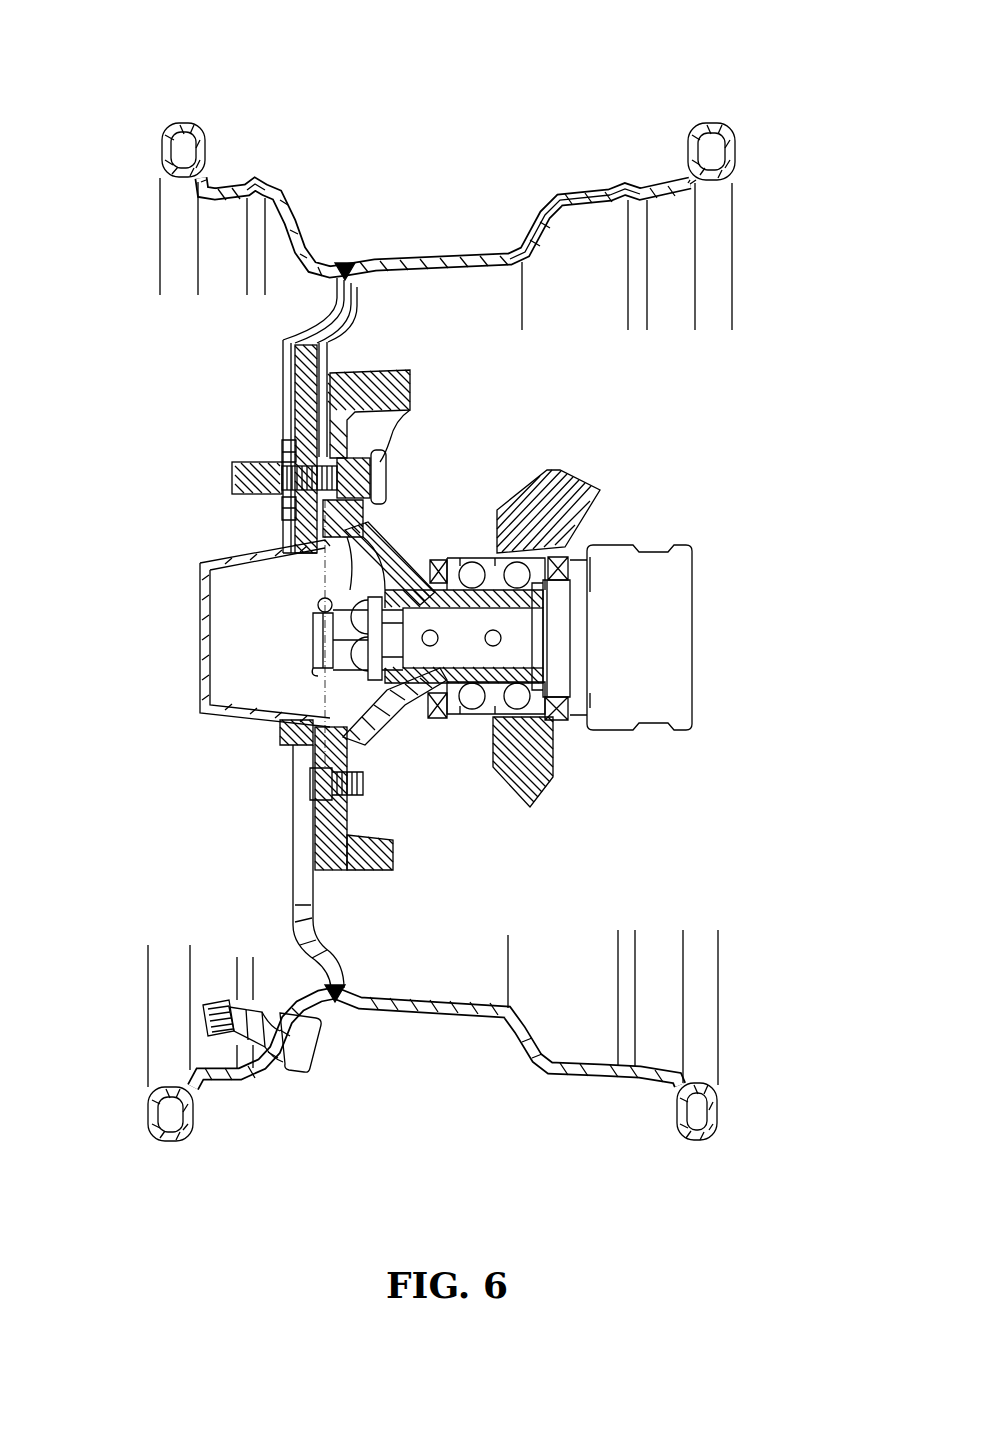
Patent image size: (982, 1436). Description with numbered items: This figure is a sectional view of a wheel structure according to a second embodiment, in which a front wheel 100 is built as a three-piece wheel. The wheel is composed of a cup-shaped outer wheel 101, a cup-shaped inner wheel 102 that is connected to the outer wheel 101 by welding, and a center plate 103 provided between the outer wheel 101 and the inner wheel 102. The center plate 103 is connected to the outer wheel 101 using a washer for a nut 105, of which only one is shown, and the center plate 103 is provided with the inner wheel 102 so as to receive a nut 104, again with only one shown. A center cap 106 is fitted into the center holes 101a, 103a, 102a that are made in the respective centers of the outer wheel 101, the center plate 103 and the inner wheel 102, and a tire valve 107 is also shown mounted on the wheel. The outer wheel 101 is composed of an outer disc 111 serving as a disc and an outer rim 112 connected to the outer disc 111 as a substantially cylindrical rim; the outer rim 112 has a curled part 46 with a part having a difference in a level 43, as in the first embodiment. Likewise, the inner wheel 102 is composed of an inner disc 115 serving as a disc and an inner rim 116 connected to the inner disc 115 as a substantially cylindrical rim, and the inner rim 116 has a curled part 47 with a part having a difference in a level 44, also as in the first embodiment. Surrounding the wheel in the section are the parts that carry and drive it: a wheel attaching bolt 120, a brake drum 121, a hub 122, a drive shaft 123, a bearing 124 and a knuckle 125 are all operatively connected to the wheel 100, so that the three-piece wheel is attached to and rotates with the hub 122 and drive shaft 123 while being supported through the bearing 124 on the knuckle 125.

The front wheel 100 is at (528, 112).
The outer wheel 101 is at (280, 183).
The center hole 101a is at (268, 545).
The inner wheel 102 is at (492, 256).
The center hole 102a is at (375, 548).
The center plate 103 is at (298, 398).
The center hole 103a is at (320, 592).
The nut 104 is at (232, 460).
The washer for a nut 105 is at (288, 452).
The center cap 106 is at (205, 718).
The tire valve 107 is at (290, 1072).
The outer disc 111 is at (283, 368).
The outer rim 112 is at (255, 184).
The inner disc 115 is at (326, 352).
The inner rim 116 is at (626, 188).
The wheel attaching bolt 120 is at (400, 428).
The brake drum 121 is at (360, 848).
The hub 122 is at (410, 728).
The drive shaft 123 is at (665, 540).
The bearing 124 is at (495, 565).
The knuckle 125 is at (555, 775).
The difference in a level 43 is at (195, 180).
The difference in a level 44 is at (700, 182).
The curled part 46 is at (168, 128).
The curled part 47 is at (712, 126).